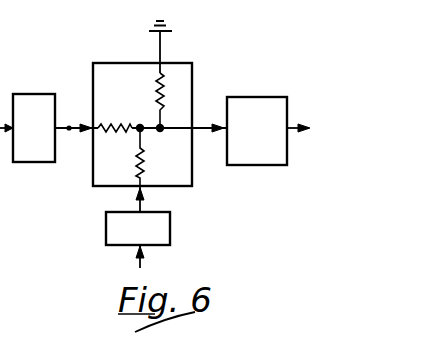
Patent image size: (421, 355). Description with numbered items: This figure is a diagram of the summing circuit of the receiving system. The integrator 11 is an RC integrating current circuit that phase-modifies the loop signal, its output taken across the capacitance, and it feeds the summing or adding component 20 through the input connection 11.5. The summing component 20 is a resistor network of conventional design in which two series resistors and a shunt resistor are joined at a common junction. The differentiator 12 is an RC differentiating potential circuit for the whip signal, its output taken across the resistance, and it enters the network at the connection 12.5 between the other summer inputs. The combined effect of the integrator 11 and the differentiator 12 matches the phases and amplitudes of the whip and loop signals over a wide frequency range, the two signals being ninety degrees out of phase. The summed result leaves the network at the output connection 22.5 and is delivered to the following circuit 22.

The integrator 11 is at (50, 80).
The summer input connection 11.5 is at (69, 132).
The summing component 20 is at (124, 54).
The summer output connection 22.5 is at (204, 127).
The output circuit 22 is at (294, 84).
The control signal input connection 12.5 is at (141, 203).
The differentiator 12 is at (170, 231).